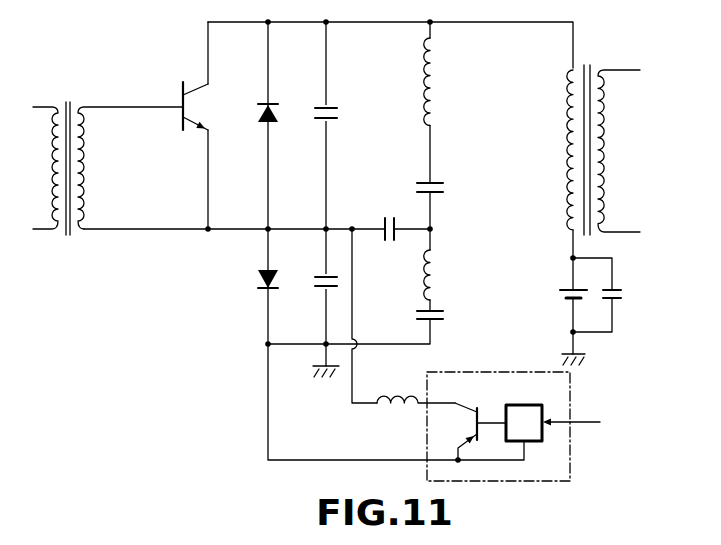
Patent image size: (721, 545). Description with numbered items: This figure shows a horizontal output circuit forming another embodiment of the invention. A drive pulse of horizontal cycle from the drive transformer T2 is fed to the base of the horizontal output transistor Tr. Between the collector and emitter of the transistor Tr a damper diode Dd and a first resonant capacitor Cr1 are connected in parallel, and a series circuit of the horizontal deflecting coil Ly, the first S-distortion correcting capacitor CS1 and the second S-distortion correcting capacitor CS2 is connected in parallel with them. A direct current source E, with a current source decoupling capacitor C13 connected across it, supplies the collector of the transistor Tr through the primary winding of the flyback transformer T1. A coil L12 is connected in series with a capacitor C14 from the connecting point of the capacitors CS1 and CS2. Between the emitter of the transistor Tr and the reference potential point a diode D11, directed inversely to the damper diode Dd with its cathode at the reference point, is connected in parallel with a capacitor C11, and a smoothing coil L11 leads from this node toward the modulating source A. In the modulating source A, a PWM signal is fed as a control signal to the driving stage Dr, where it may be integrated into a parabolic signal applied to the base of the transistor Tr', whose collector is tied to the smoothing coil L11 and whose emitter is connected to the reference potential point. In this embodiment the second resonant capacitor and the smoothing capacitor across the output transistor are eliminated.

The drive transformer T2 is at (108, 159).
The horizontal output transistor Tr is at (187, 87).
The damper diode Dd is at (276, 123).
The first resonant capacitor Cr1 is at (343, 114).
The horizontal deflecting coil Ly is at (439, 82).
The first S-distortion correcting capacitor CS1 is at (446, 191).
The flyback transformer T1 is at (603, 141).
The second S-distortion correcting capacitor CS2 is at (388, 239).
The capacitor C11 is at (322, 277).
The diode D11 is at (286, 281).
The coil L12 is at (445, 275).
The capacitor C14 is at (445, 319).
The direct current source E is at (566, 295).
The current source decoupling capacitor C13 is at (630, 293).
The modulating source A is at (478, 371).
The transistor Tr' is at (480, 419).
The smoothing coil L11 is at (416, 412).
The driving stage Dr is at (524, 423).
The pulse width modulating signal PWM is at (593, 423).